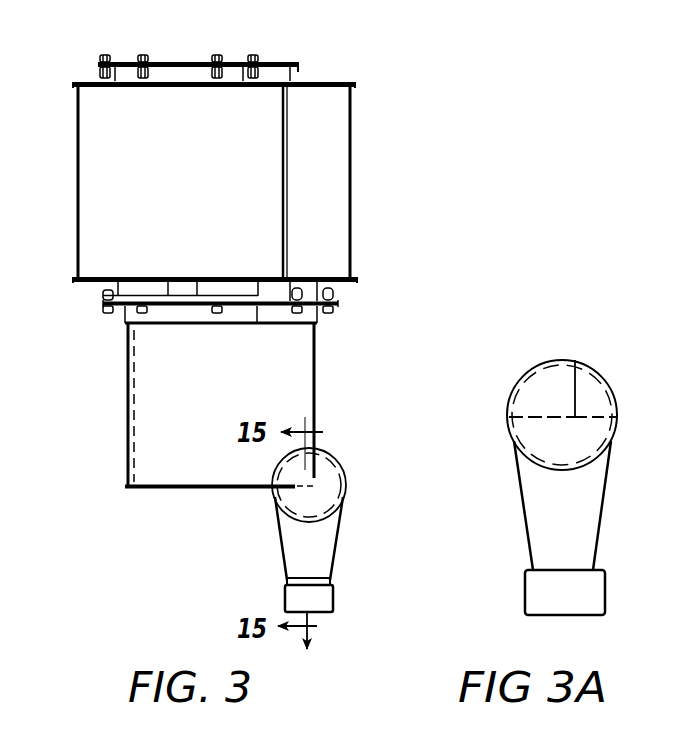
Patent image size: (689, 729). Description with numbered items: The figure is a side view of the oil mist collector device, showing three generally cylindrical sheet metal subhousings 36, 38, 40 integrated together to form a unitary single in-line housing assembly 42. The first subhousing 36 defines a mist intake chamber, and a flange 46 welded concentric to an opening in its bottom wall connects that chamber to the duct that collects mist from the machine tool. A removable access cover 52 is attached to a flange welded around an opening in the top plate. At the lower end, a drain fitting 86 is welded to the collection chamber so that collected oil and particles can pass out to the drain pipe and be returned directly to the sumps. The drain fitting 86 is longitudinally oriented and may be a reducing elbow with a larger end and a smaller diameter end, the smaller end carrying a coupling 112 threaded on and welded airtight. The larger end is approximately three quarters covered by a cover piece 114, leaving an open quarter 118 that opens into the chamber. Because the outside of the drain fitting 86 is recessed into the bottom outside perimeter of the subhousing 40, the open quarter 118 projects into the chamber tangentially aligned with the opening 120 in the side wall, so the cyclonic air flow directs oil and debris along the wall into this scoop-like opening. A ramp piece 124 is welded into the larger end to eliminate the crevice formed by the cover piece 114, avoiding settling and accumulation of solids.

In FIG. 3, the first subhousing 36 is at (97, 142).
In FIG. 3, the second subhousing 38 is at (330, 158).
In FIG. 3, the third subhousing 40 is at (130, 403).
In FIG. 3, the housing assembly 42 is at (378, 243).
In FIG. 3, the flange 46 is at (100, 300).
In FIG. 3, the removable access cover 52 is at (172, 60).
In FIG. 3, the drain fitting 86 is at (340, 521).
In FIG. 3A, the drain fitting 86 is at (522, 497).
In FIG. 3, the coupling 112 is at (285, 598).
In FIG. 3A, the coupling 112 is at (527, 582).
In FIG. 3A, the cover piece 114 is at (598, 397).
In FIG. 3, the open quarter 118 is at (285, 455).
In FIG. 3A, the open quarter 118 is at (551, 388).
In FIG. 3, the opening in the side wall 120 is at (314, 486).
In FIG. 3A, the ramp piece 124 is at (590, 440).